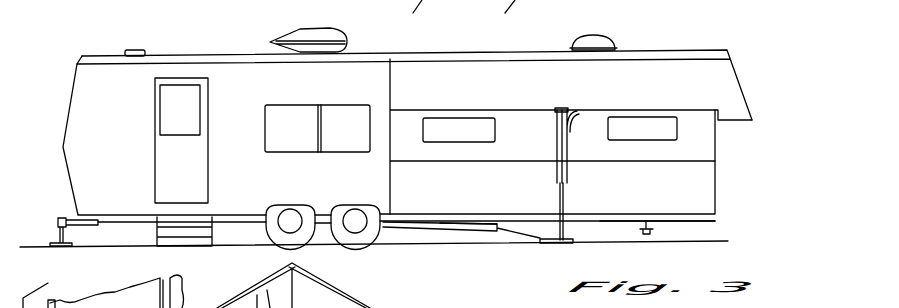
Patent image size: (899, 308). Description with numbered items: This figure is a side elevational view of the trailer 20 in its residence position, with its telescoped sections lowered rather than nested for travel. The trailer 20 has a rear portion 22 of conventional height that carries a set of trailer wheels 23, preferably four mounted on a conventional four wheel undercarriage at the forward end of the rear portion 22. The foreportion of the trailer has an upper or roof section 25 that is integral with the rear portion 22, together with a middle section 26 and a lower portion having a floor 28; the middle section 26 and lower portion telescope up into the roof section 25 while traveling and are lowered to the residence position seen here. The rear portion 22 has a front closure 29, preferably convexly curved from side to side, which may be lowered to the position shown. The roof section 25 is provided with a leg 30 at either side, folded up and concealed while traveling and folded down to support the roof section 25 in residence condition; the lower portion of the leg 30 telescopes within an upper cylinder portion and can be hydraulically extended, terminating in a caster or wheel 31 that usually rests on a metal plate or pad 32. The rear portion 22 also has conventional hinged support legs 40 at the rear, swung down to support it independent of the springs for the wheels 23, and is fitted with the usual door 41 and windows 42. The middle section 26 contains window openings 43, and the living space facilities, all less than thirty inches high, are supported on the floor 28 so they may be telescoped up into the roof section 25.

The trailer 20 is at (118, 43).
The rear portion 22 is at (243, 77).
The trailer wheels 23 is at (302, 243).
The roof section 25 is at (183, 292).
The middle section 26 is at (345, 288).
The floor 28 is at (716, 221).
The front closure 29 is at (476, 226).
The leg 30 is at (567, 183).
The caster or wheel 31 is at (553, 227).
The metal plate or pad 32 is at (547, 242).
The hinged support legs 40 is at (57, 222).
The door 41 is at (164, 163).
The windows 42 is at (284, 140).
The window openings 43 is at (646, 137).